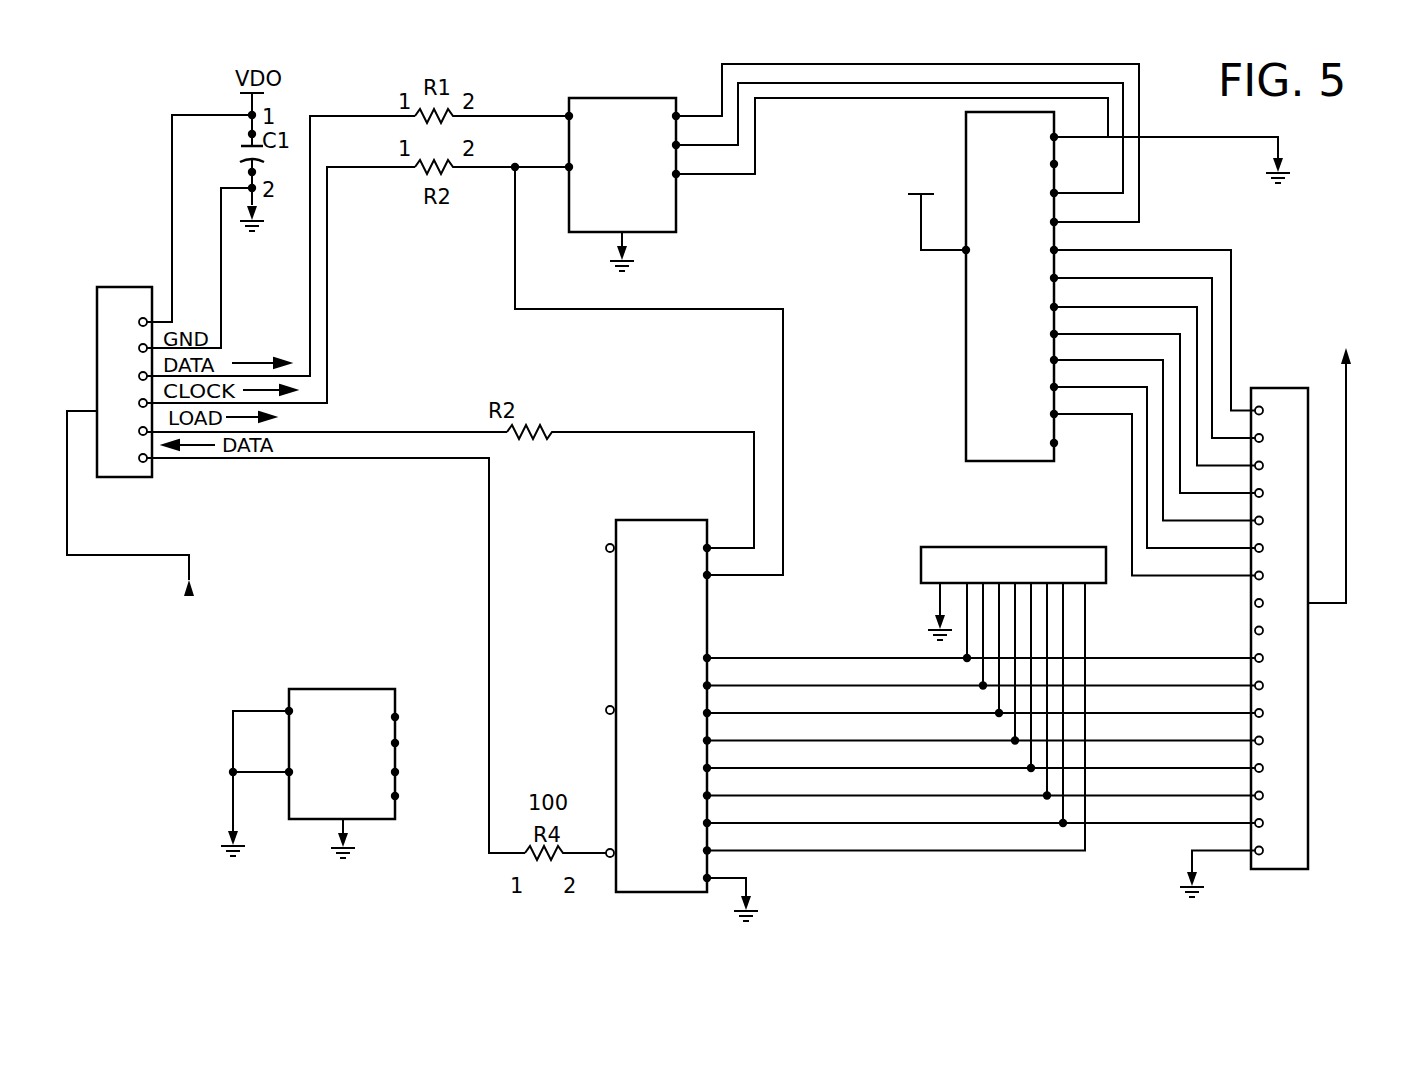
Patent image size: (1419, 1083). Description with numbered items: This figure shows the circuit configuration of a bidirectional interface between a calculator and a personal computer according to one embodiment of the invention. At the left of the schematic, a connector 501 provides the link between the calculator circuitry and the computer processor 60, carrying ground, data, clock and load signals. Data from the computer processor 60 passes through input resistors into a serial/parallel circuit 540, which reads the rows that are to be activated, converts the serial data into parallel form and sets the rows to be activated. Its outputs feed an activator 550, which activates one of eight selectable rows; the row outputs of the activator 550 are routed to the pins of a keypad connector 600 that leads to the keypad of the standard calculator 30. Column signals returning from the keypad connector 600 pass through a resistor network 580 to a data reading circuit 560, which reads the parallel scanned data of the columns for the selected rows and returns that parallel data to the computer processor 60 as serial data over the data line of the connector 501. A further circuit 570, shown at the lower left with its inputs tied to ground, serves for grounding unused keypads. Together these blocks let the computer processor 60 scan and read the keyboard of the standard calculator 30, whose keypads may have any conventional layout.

The connector 501 is at (130, 477).
The serial/parallel circuit 540 is at (650, 98).
The activator 550 is at (966, 310).
The data reading circuit 560 is at (616, 598).
The circuit for grounding unused keypads 570 is at (380, 689).
The resistor network RN1 580 is at (921, 563).
The keypad connector J2 600 is at (1308, 727).
The computer processor 60 is at (177, 533).
The standard calculator 30 is at (1323, 427).